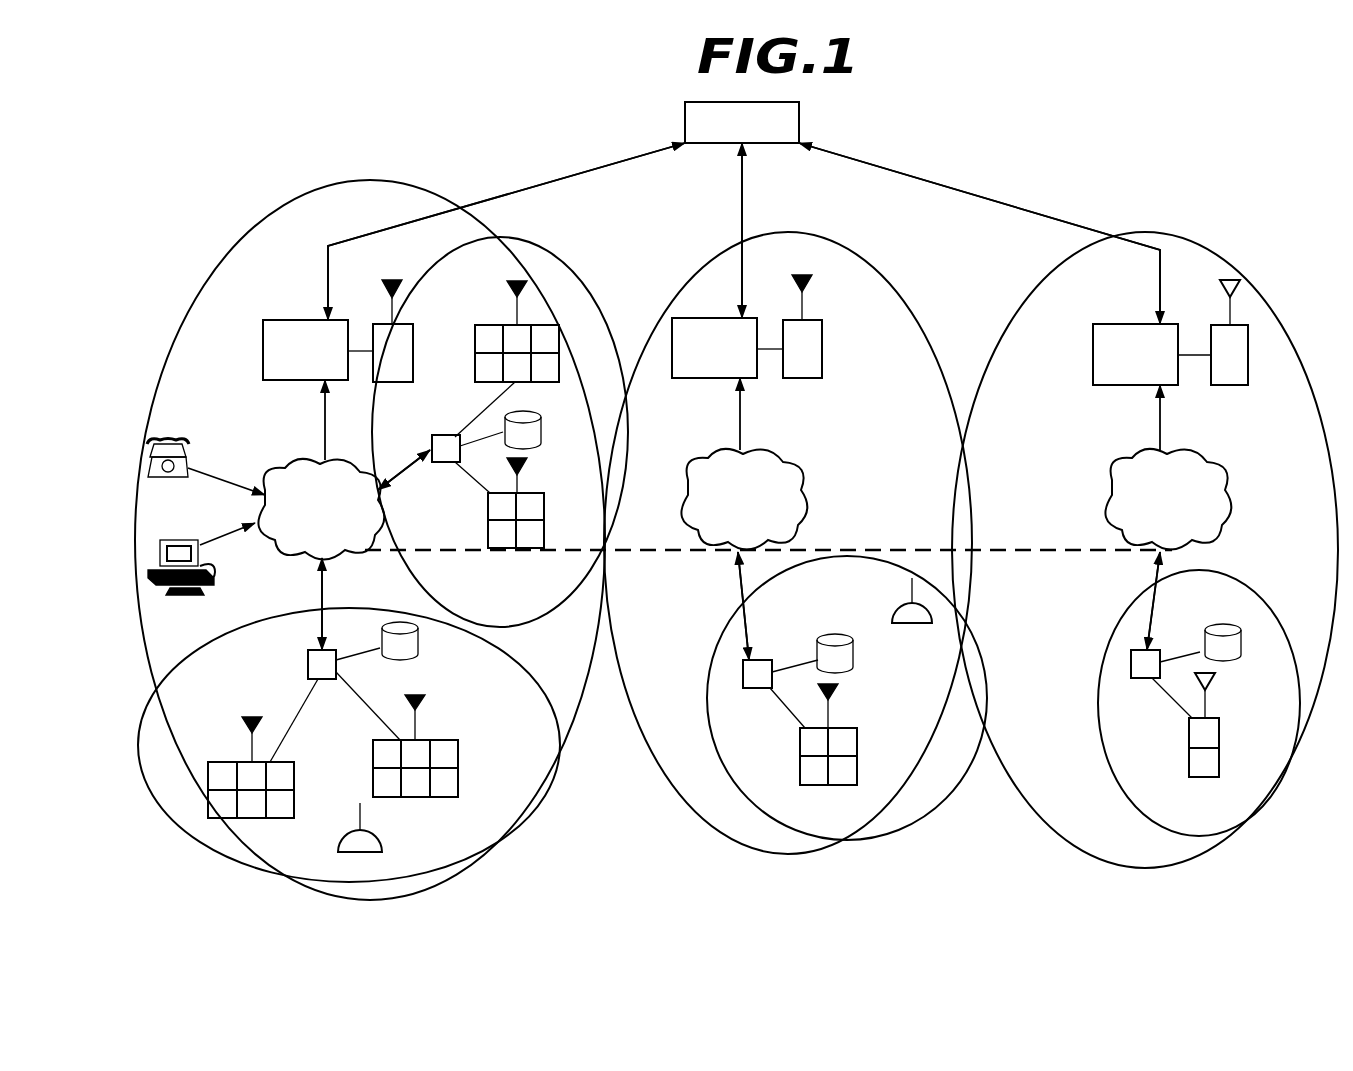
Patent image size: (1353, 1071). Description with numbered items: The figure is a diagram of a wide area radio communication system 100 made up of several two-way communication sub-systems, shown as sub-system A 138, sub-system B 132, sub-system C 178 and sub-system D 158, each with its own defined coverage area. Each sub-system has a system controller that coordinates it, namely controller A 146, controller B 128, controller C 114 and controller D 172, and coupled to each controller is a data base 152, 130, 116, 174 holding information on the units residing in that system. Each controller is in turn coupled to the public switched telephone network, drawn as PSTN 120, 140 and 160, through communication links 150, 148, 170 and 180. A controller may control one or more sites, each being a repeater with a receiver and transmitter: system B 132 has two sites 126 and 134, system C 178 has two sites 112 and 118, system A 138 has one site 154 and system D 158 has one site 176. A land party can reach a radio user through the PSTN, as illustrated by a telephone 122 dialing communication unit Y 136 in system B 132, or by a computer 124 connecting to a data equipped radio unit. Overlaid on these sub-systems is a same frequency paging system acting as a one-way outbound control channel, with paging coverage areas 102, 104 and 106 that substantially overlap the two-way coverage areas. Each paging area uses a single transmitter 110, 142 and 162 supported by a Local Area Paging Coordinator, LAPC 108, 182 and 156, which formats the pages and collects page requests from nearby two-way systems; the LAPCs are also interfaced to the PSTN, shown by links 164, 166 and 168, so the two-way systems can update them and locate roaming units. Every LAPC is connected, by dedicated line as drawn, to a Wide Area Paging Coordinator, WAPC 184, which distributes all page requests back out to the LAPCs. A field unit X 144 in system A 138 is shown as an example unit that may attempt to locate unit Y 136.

The radio communication system 100 is at (627, 884).
The paging coverage area 102 is at (243, 238).
The paging coverage area 104 is at (907, 303).
The paging coverage area 106 is at (1205, 248).
The Local Area Paging Coordinator 108 is at (260, 322).
The paging transmitter 110 is at (414, 345).
The site 112 is at (472, 362).
The system controller 114 is at (428, 437).
The data base 116 is at (540, 440).
The site 118 is at (487, 518).
The public switched telephone network 120 is at (333, 552).
The telephone 122 is at (213, 470).
The computer 124 is at (165, 598).
The site 126 is at (298, 783).
The system controller 128 is at (307, 668).
The data base 130 is at (417, 650).
The communication sub-system B 132 is at (190, 837).
The site 134 is at (458, 773).
The communication unit Y 136 is at (383, 838).
The communication sub-system A 138 is at (715, 640).
The public switched telephone network 140 is at (783, 468).
The paging transmitter 142 is at (822, 348).
The communication unit X 144 is at (908, 603).
The system controller 146 is at (752, 693).
The communication link 148 is at (750, 623).
The communication link 150 is at (318, 608).
The data base 152 is at (842, 632).
The site 154 is at (858, 763).
The Local Area Paging Coordinator 156 is at (1125, 322).
The communication sub-system D 158 is at (1260, 813).
The public switched telephone network 160 is at (1220, 475).
The paging transmitter 162 is at (1250, 348).
The communication link 164 is at (325, 427).
The communication link 166 is at (740, 450).
The communication link 168 is at (1158, 440).
The communication link 170 is at (1147, 617).
The system controller 172 is at (1140, 680).
The data base 174 is at (1232, 627).
The site 176 is at (1220, 733).
The communication sub-system C 178 is at (580, 265).
The communication link 180 is at (400, 472).
The Local Area Paging Coordinator 182 is at (712, 317).
The Wide Area Paging Coordinator 184 is at (807, 128).